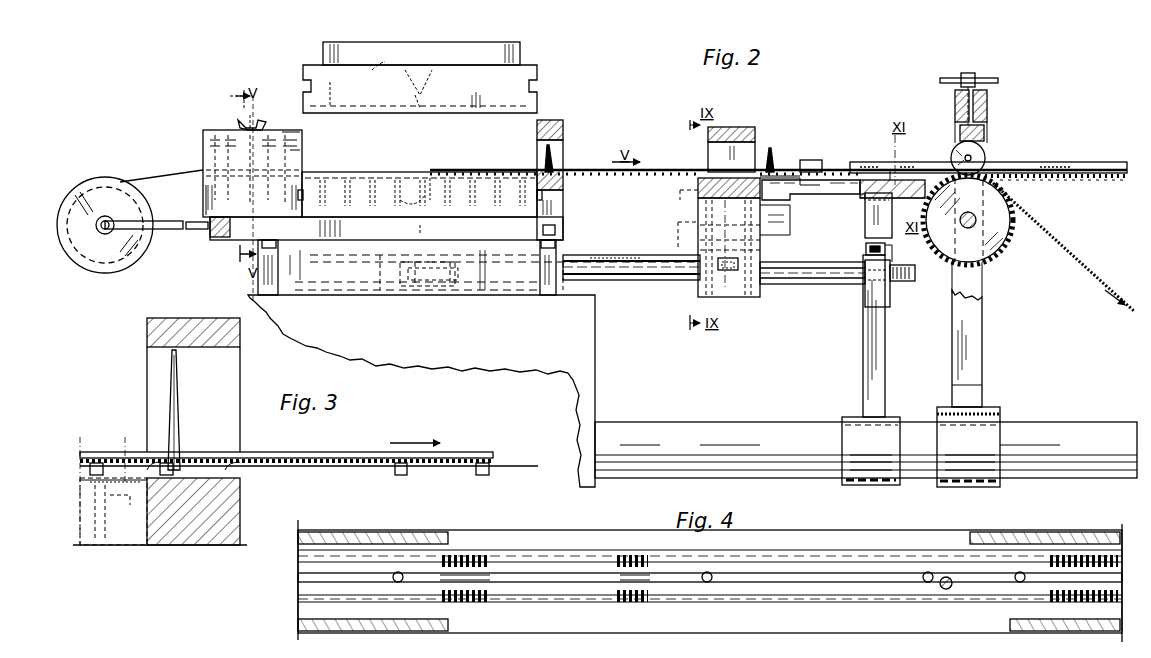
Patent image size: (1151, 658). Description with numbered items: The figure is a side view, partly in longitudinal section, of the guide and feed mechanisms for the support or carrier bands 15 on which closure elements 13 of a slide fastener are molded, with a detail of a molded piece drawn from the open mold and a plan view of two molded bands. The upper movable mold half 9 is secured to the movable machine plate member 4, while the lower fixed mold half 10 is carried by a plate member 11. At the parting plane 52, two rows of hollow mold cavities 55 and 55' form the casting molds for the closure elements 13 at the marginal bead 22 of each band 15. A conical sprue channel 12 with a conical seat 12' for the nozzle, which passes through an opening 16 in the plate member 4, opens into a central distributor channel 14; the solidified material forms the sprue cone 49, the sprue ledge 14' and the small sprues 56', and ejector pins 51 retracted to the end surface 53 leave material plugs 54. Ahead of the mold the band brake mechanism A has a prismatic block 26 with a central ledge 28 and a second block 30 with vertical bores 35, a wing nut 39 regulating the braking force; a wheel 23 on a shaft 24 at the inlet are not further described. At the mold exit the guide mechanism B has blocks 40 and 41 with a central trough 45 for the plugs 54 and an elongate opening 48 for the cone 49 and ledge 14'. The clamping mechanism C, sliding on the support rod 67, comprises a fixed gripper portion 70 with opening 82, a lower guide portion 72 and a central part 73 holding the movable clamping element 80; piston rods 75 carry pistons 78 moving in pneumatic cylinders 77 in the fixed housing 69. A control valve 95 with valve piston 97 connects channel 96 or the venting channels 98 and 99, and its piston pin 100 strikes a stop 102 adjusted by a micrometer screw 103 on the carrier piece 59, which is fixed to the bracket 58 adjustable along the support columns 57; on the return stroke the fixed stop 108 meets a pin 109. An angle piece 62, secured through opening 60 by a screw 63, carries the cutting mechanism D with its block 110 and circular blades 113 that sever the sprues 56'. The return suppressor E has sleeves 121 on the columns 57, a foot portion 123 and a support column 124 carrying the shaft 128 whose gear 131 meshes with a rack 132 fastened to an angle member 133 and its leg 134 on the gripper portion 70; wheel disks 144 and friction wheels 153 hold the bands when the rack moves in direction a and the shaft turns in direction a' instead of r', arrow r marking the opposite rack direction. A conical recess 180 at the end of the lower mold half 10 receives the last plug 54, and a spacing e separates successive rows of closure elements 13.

In FIG. 2, the movable machine plate member 4 is at (520, 49).
In FIG. 2, the upper movable mold half 9 is at (540, 78).
In FIG. 2, the lower fixed mold half 10 is at (332, 190).
In FIG. 3, the lower fixed mold half 10 is at (127, 545).
In FIG. 2, the plate member 11 is at (216, 238).
In FIG. 2, the conical-shaped sprue runner or channel 12 is at (430, 98).
In FIG. 2, the conical seat 12' is at (436, 81).
In FIG. 3, the closure element 13 is at (340, 456).
In FIG. 4, the closure element 13 is at (470, 555).
In FIG. 2, the central distributor channel 14 is at (492, 95).
In FIG. 2, the sprue ledge 14' is at (1063, 191).
In FIG. 3, the sprue ledge 14' is at (471, 441).
In FIG. 4, the sprue ledge 14' is at (651, 542).
In FIG. 3, the support or carrier band 15 is at (516, 466).
In FIG. 4, the support or carrier band 15 is at (358, 610).
In FIG. 2, the opening 16 is at (375, 75).
In FIG. 4, the peripheral or marginal bead 22 is at (558, 562).
In FIG. 2, the hand wheel 23 is at (105, 177).
In FIG. 2, the shaft 24 is at (165, 230).
In FIG. 2, the prismatic block 26 is at (206, 197).
In FIG. 2, the central ledge or projection 28 is at (302, 157).
In FIG. 2, the second prismatic block 30 is at (203, 140).
In FIG. 2, the vertical bores 35 is at (302, 134).
In FIG. 2, the wing nut 39 is at (258, 122).
In FIG. 2, the block 40 is at (560, 207).
In FIG. 3, the block 40 is at (210, 545).
In FIG. 2, the second block 41 is at (560, 125).
In FIG. 3, the second block 41 is at (148, 330).
In FIG. 3, the central deeper trough 45 is at (225, 478).
In FIG. 2, the elongate continuous opening 48 is at (560, 152).
In FIG. 3, the conical sprue piece 49 is at (170, 365).
In FIG. 4, the conical sprue piece 49 is at (950, 577).
In FIG. 2, the ejector pins 51 is at (412, 175).
In FIG. 3, the ejector pins 51 is at (95, 522).
In FIG. 2, the parting plane 52 is at (432, 170).
In FIG. 3, the end surface 53 is at (92, 505).
In FIG. 3, the injection material plugs 54 is at (478, 476).
In FIG. 4, the injection material plugs 54 is at (868, 578).
In FIG. 3, the hollow mold cavities 55 is at (93, 488).
In FIG. 2, the hollow mold cavities 55' is at (331, 86).
In FIG. 4, the sprues or spurs 56' is at (593, 602).
In FIG. 2, the fixed support columns 57 is at (672, 428).
In FIG. 2, the support or carrier bracket 58 is at (880, 372).
In FIG. 2, the carrier or support piece 59 is at (866, 298).
In FIG. 2, the continuous opening 60 is at (866, 248).
In FIG. 2, the angle piece 62 is at (865, 217).
In FIG. 2, the screw 63 is at (890, 248).
In FIG. 2, the support rod 67 is at (612, 283).
In FIG. 2, the fixed housing 69 is at (348, 283).
In FIG. 2, the fixed clamping tong portion 70 is at (755, 128).
In FIG. 2, the lower guide portion 72 is at (762, 297).
In FIG. 2, the central part 73 is at (698, 186).
In FIG. 2, the piston rod 75 is at (503, 278).
In FIG. 2, the pneumatic cylinder 77 is at (382, 292).
In FIG. 2, the piston member 78 is at (421, 290).
In FIG. 2, the movable clamping element 80 is at (710, 176).
In FIG. 2, the elongate opening 82 is at (708, 155).
In FIG. 2, the control valve 95 is at (727, 297).
In FIG. 2, the channel 96 is at (716, 245).
In FIG. 2, the valve piston 97 is at (760, 290).
In FIG. 2, the channel 98 is at (745, 255).
In FIG. 2, the venting channel 99 is at (752, 297).
In FIG. 2, the piston pin 100 is at (776, 284).
In FIG. 2, the stop 102 is at (866, 280).
In FIG. 2, the micrometer screw 103 is at (902, 282).
In FIG. 2, the fixed stop 108 is at (668, 280).
In FIG. 2, the pin 109 is at (568, 285).
In FIG. 2, the block 110 is at (865, 198).
In FIG. 2, the circular cutting blades 113 is at (895, 180).
In FIG. 2, the hollow sleeves or bushings 121 is at (988, 445).
In FIG. 2, the base or foot portion 123 is at (984, 396).
In FIG. 2, the support column 124 is at (984, 360).
In FIG. 2, the shaft 128 is at (968, 265).
In FIG. 2, the gear 131 is at (1000, 240).
In FIG. 2, the rack 132 is at (1097, 162).
In FIG. 2, the angle member 133 is at (785, 220).
In FIG. 2, the upper horizontal leg 134 is at (805, 168).
In FIG. 2, the wheel disks 144 is at (998, 255).
In FIG. 2, the friction wheels 153 is at (960, 152).
In FIG. 3, the conical recess 180 is at (104, 482).
In FIG. 2, the band brake mechanism A is at (198, 124).
In FIG. 2, the guide mechanism B is at (566, 138).
In FIG. 3, the guide mechanism B is at (244, 392).
In FIG. 2, the clamping mechanism C is at (752, 120).
In FIG. 2, the cutting mechanism D is at (882, 165).
In FIG. 2, the return blocking device E is at (992, 140).
In FIG. 2, the arrow a is at (1053, 125).
In FIG. 2, the direction arrow r is at (1042, 149).
In FIG. 2, the arrow a' is at (937, 230).
In FIG. 2, the arrow r' is at (952, 197).
In FIG. 4, the spacing e is at (490, 550).